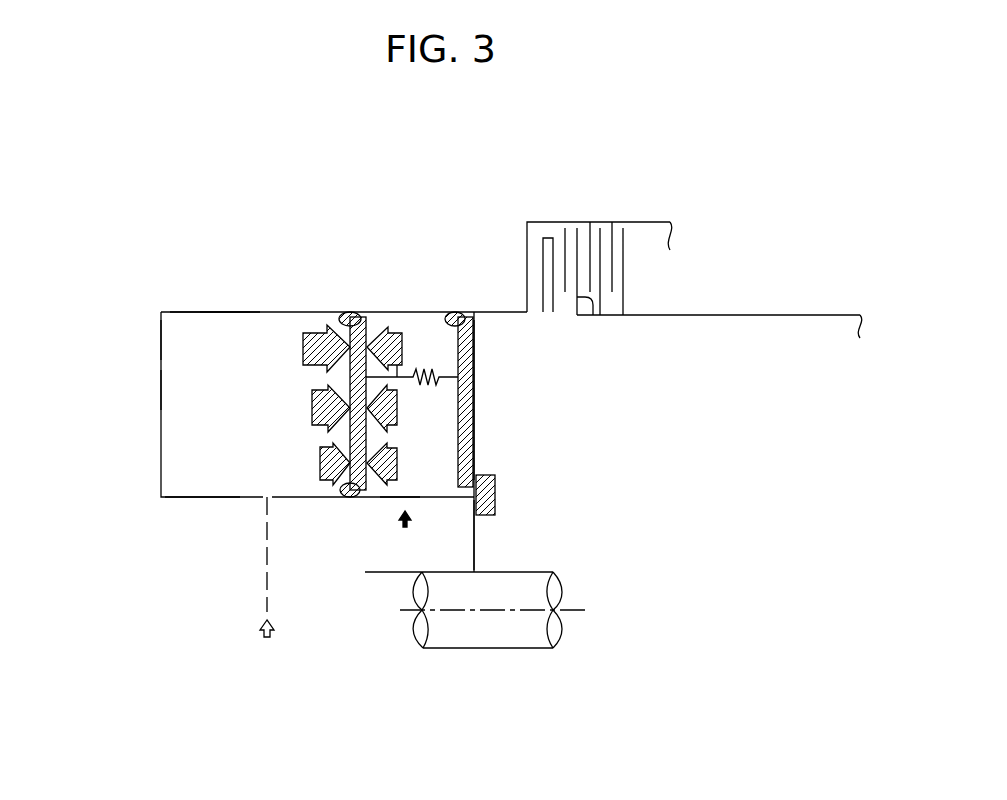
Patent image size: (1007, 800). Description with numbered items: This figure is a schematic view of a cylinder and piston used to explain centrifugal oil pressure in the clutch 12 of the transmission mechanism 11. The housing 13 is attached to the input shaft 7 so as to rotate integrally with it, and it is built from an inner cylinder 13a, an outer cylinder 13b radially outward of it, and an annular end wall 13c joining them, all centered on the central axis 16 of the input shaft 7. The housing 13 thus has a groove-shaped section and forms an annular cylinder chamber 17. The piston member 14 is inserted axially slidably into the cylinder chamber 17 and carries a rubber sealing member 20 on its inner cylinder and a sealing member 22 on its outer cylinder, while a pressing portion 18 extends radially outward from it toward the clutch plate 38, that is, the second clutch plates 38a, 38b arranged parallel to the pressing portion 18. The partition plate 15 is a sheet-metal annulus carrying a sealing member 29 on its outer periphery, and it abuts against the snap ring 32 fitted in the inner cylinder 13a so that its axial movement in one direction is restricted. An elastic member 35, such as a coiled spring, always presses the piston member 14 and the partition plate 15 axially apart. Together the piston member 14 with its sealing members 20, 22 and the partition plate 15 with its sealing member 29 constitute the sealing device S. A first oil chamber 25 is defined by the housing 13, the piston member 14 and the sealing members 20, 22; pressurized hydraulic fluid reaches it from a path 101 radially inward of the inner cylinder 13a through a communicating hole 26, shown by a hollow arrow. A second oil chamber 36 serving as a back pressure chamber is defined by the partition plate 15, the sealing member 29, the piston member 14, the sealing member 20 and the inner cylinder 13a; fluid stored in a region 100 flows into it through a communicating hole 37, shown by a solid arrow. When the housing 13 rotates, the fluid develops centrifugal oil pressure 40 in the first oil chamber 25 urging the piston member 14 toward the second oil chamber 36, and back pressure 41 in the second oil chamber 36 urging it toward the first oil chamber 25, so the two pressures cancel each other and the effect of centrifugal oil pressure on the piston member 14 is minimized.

The input shaft 7 is at (515, 572).
The transmission mechanism 11 is at (820, 301).
The clutch 12 is at (147, 291).
The housing 13 is at (285, 301).
The inner cylinder 13a is at (183, 511).
The outer cylinder 13b is at (228, 301).
The annular end wall 13c is at (161, 343).
The piston member 14 is at (362, 314).
The partition plate 15 is at (489, 443).
The central axis 16 is at (572, 610).
The cylinder chamber 17 is at (197, 309).
The pressing portion 18 is at (556, 245).
The sealing member 20 is at (344, 509).
The sealing member 22 is at (342, 301).
The first oil chamber 25 is at (178, 388).
The communicating hole 26 is at (263, 498).
The sealing member 29 is at (462, 301).
The snap ring 32 is at (495, 497).
The elastic member 35 is at (400, 330).
The second oil chamber 36 is at (450, 530).
The communicating hole 37 is at (405, 509).
The clutch plate 38 is at (643, 281).
The second clutch plate 38a is at (565, 238).
The second clutch plate 38b is at (588, 305).
The centrifugal oil pressure 40 is at (303, 465).
The centrifugal oil pressure (back pressure) 41 is at (503, 360).
The region 100 is at (423, 571).
The path 101 is at (263, 590).
The sealing device S is at (360, 252).